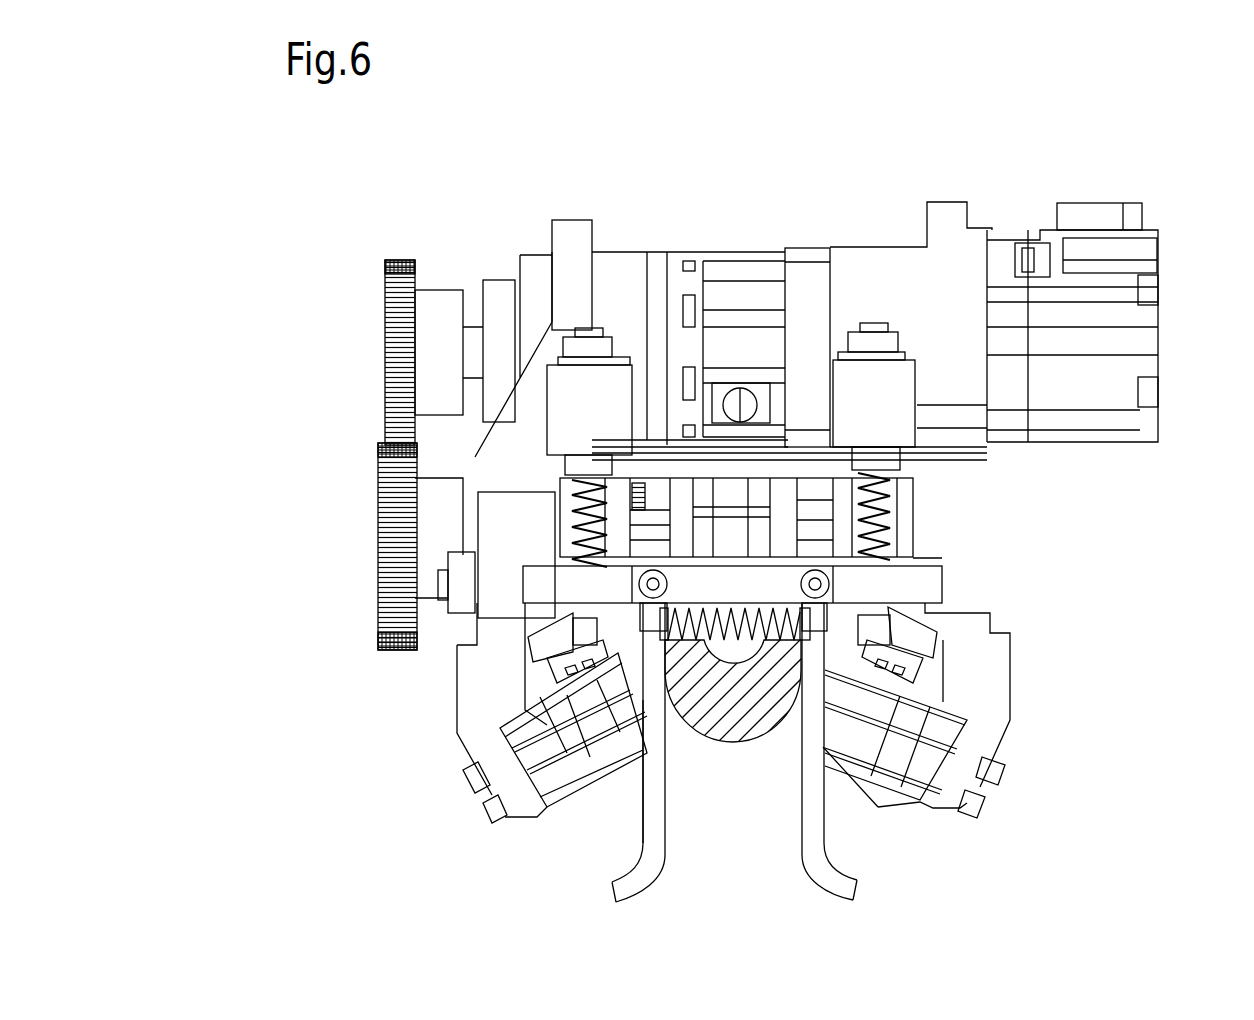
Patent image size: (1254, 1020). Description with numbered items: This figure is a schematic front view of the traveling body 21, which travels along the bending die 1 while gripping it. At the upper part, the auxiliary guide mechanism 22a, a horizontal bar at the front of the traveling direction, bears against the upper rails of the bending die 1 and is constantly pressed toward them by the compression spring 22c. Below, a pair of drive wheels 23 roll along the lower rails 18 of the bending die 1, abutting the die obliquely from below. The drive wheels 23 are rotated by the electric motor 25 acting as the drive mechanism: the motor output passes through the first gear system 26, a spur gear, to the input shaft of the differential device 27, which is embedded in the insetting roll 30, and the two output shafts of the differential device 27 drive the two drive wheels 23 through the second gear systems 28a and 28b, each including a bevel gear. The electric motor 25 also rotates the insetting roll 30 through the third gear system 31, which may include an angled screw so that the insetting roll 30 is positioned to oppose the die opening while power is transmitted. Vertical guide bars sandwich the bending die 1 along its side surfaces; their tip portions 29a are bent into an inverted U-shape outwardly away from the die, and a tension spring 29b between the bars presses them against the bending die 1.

The bending die 1 is at (773, 720).
The lower rail 18 is at (660, 650).
The traveling body 21 is at (272, 546).
The auxiliary guide mechanism 22a is at (610, 623).
The compression spring 22c is at (767, 537).
The drive wheel 23 is at (597, 762).
The electric motor 25 is at (1127, 337).
The first gear system 26 is at (392, 543).
The differential device 27 is at (857, 508).
The second gear system 28a is at (530, 643).
The second gear system 28b is at (927, 632).
The tip portion 29a is at (622, 880).
The tension spring 29b is at (642, 785).
The insetting roll 30 is at (732, 540).
The third gear system 31 is at (812, 470).